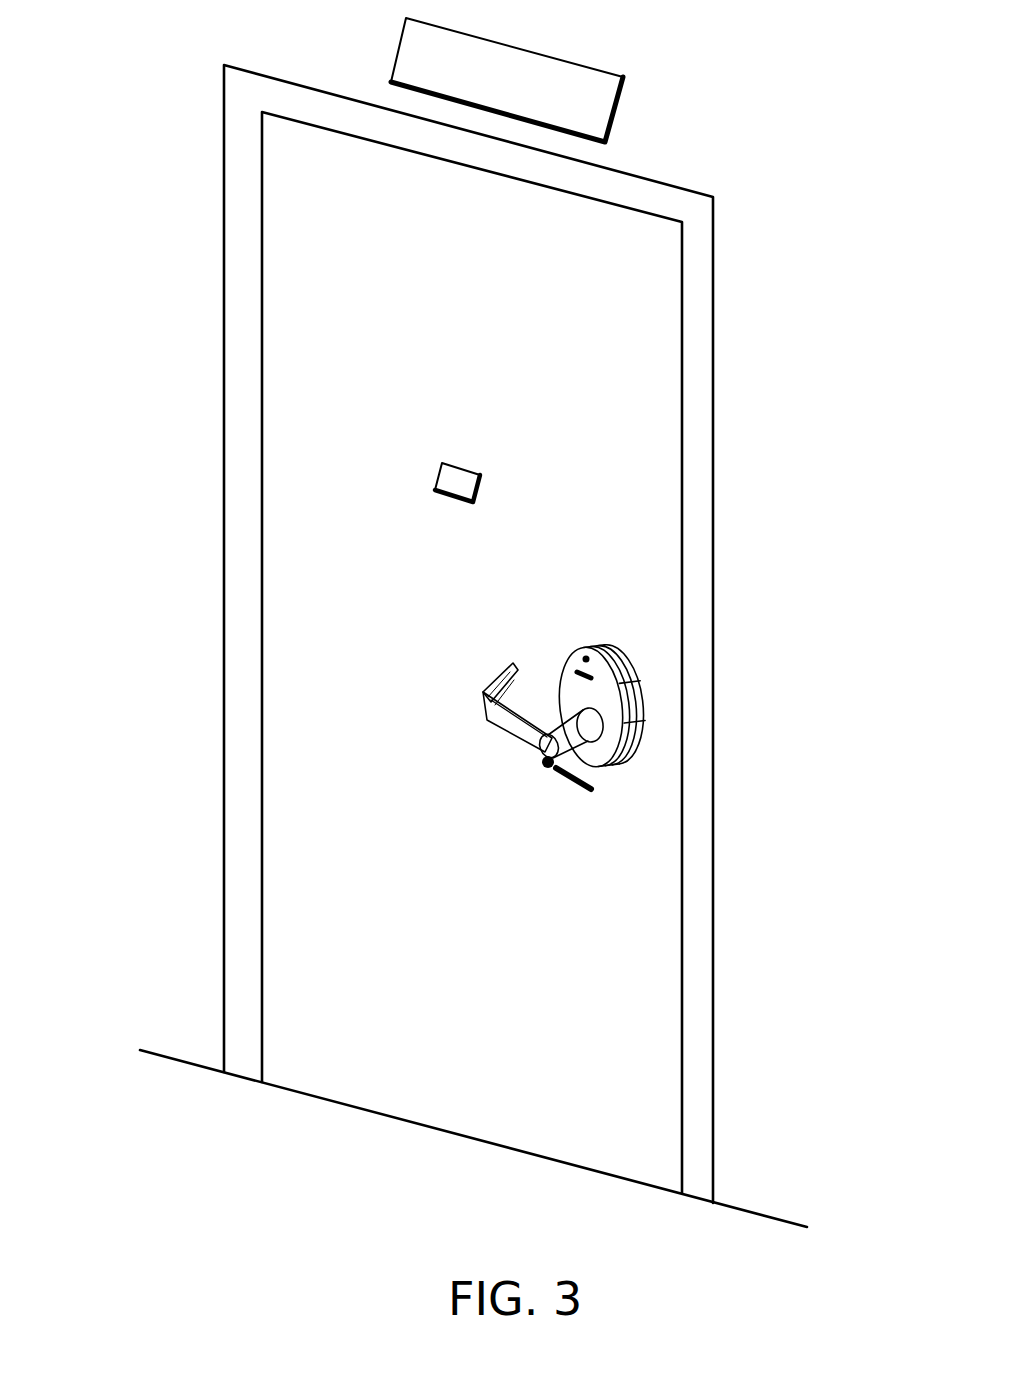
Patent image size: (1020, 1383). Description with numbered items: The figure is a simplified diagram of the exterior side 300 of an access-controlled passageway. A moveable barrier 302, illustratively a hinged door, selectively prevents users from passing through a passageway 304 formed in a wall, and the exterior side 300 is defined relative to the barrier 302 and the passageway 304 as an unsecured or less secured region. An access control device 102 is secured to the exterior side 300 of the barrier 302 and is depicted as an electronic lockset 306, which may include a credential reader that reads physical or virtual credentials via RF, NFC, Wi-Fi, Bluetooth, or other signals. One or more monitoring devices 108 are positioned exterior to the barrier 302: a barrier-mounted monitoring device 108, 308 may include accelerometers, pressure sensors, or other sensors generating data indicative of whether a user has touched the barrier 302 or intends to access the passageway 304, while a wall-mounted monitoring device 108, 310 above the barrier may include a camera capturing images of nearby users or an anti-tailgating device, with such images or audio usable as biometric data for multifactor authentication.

The exterior side 300 is at (114, 76).
The moveable barrier 302 is at (679, 266).
The passageway 304 is at (786, 493).
The access control device 102 is at (561, 682).
The electronic lockset 306 is at (552, 634).
The monitoring device 108 is at (514, 256).
The barrier-mounted monitoring device 308 is at (459, 468).
The wall-mounted monitoring device 310 is at (513, 46).